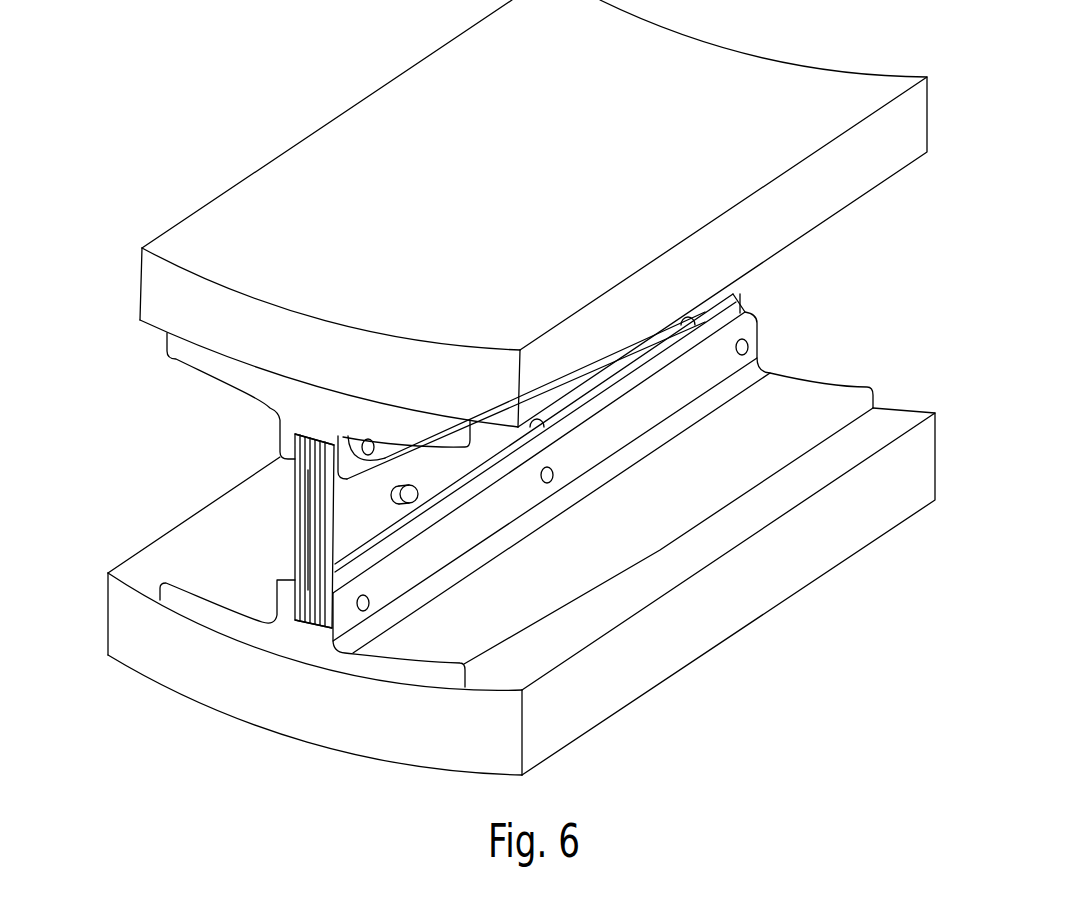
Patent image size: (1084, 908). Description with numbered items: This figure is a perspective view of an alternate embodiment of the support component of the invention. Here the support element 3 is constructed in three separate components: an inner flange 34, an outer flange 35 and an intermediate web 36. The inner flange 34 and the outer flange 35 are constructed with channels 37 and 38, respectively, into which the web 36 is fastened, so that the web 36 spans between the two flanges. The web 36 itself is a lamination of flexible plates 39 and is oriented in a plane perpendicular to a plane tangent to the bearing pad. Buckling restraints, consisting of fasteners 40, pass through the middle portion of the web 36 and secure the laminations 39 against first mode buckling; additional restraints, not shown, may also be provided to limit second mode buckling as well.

The support element 3 is at (172, 465).
The inner flange 34 is at (192, 367).
The outer flange 35 is at (204, 612).
The intermediate web 36 is at (294, 553).
The channel 37 is at (317, 440).
The channel 38 is at (297, 620).
The flexible plates 39 is at (310, 520).
The fasteners 40 is at (415, 488).